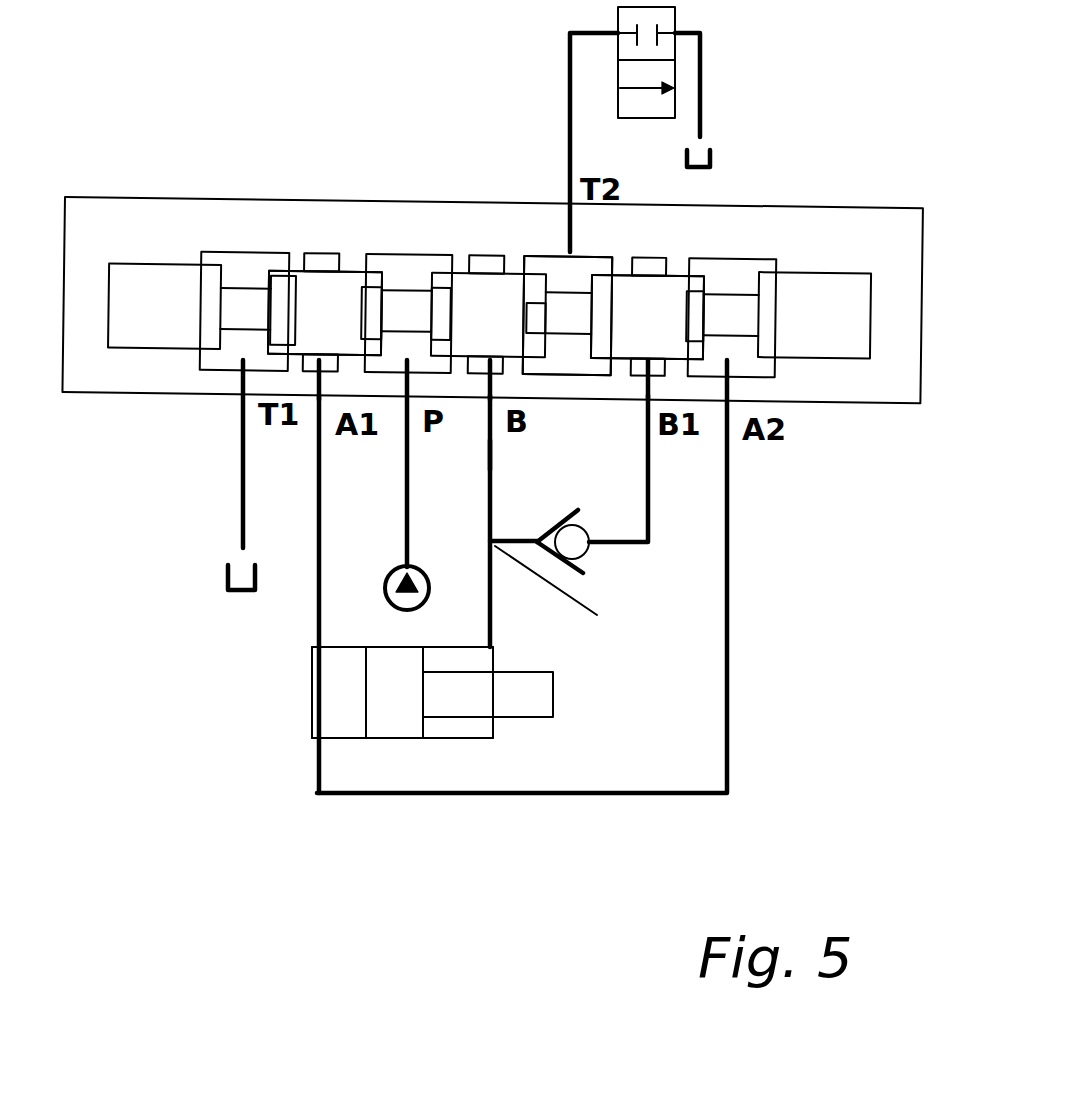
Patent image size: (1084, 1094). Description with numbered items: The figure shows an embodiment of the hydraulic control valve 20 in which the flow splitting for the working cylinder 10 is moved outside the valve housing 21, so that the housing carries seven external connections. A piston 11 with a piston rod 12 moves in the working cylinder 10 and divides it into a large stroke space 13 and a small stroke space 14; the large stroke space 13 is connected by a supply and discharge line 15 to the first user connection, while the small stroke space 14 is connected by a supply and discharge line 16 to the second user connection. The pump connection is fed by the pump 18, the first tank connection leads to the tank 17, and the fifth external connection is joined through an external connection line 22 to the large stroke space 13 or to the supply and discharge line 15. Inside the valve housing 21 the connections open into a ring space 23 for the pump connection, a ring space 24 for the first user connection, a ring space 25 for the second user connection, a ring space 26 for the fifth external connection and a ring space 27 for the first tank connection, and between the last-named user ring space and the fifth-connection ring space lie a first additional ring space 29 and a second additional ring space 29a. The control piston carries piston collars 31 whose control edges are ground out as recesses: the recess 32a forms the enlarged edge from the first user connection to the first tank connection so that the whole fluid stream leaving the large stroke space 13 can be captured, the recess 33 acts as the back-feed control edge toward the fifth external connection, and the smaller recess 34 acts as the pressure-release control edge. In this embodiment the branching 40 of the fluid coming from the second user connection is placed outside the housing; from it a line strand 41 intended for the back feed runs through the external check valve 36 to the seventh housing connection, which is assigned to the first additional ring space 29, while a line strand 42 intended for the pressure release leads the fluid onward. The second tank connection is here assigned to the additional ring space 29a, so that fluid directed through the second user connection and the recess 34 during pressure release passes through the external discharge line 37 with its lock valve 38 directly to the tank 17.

The working cylinder 10 is at (493, 720).
The piston 11 is at (398, 722).
The piston rod 12 is at (548, 692).
The large stroke space 13 is at (338, 725).
The small stroke space 14 is at (462, 725).
The supply and discharge line 15 is at (316, 600).
The supply and discharge line 16 is at (495, 600).
The tank 17 is at (707, 150).
The pump 18 is at (385, 593).
The control valve 20 is at (905, 163).
The valve housing 21 is at (822, 208).
The external connection line 22 is at (730, 757).
The ring space 23 is at (425, 363).
The ring space 24 is at (340, 363).
The ring space 25 is at (510, 363).
The ring space 26 is at (748, 363).
The ring space 27 is at (280, 363).
The first additional ring space 29 is at (641, 363).
The second additional ring space 29a is at (565, 363).
The piston collar 31 is at (332, 283).
The recess 32a is at (273, 278).
The recess 33 is at (692, 303).
The recess 34 is at (527, 295).
The check valve 36 is at (592, 556).
The discharge line 37 is at (568, 78).
The lock valve 38 is at (676, 20).
The branching 40 is at (565, 596).
The line strand 41 is at (652, 507).
The line strand 42 is at (490, 462).